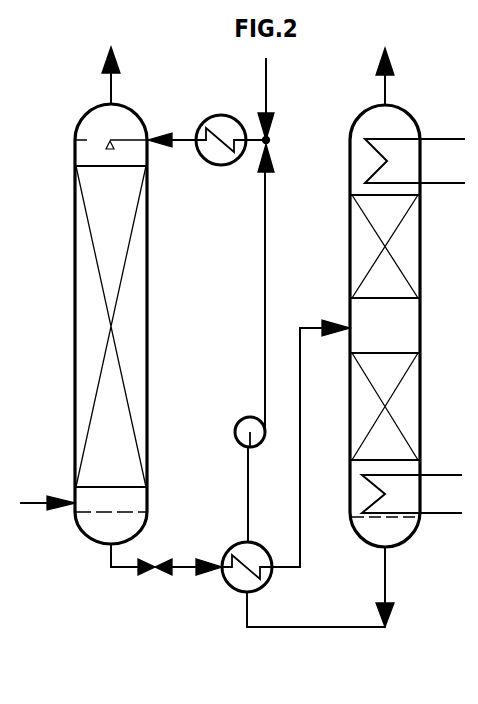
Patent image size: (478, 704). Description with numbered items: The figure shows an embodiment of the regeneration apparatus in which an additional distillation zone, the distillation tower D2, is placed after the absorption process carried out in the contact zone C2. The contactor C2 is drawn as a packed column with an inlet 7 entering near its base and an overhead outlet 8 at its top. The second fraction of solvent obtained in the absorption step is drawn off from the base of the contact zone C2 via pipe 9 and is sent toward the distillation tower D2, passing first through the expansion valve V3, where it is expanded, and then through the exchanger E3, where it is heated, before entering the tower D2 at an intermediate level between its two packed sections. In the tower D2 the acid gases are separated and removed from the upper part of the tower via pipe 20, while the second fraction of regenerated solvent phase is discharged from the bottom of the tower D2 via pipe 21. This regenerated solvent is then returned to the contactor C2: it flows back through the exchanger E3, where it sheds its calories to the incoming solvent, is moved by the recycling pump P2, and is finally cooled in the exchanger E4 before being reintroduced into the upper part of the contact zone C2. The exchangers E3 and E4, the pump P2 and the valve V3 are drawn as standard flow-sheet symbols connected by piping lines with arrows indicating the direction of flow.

The feed inlet line to column C2 7 is at (30, 498).
The overhead outlet of column C2 8 is at (111, 90).
The pipe 9 is at (111, 568).
The pipe 20 is at (384, 91).
The pipe 21 is at (315, 626).
The contact zone C2 is at (148, 287).
The distillation tower D2 is at (420, 288).
The exchanger E3 is at (247, 552).
The exchanger E4 is at (207, 127).
The recycling pump P2 is at (249, 465).
The expansion valve V3 is at (180, 557).